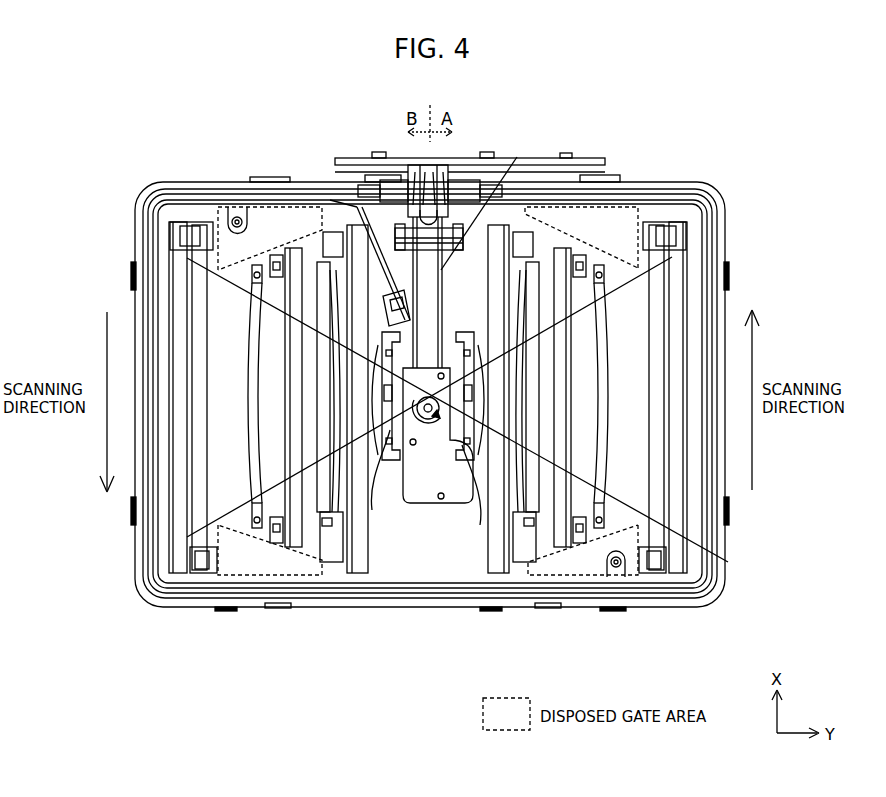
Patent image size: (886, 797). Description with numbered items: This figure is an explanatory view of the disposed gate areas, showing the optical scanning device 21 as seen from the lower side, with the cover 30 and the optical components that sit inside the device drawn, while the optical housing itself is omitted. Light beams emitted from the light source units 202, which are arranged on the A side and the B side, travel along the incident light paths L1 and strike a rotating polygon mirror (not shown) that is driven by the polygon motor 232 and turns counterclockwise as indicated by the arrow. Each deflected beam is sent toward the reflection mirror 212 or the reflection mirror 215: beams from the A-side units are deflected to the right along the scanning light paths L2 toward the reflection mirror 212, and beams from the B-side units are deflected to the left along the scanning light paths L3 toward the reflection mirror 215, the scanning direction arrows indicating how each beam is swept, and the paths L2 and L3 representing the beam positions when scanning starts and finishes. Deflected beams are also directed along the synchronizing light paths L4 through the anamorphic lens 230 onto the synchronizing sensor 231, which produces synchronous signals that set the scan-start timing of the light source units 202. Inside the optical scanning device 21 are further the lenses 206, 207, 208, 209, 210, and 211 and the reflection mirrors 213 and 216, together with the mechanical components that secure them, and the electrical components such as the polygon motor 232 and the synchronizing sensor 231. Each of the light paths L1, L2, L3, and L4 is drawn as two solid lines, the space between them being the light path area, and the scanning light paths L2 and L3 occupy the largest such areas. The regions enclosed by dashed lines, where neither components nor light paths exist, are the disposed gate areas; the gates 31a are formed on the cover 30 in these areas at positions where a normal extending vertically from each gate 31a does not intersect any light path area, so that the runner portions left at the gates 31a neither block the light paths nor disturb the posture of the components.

The optical scanning device 21 is at (712, 150).
The cover 30 is at (440, 560).
The gate 31a is at (240, 212).
The light source unit 202 is at (410, 160).
The lens 206 is at (480, 520).
The lens 207 is at (660, 515).
The lens 208 is at (535, 545).
The lens 209 is at (400, 505).
The lens 210 is at (278, 545).
The lens 211 is at (350, 580).
The reflection mirror 212 is at (685, 455).
The reflection mirror 213 is at (565, 560).
The reflection mirror 215 is at (150, 578).
The reflection mirror 216 is at (338, 562).
The anamorphic lens 230 is at (398, 365).
The synchronizing sensor 231 is at (395, 305).
The polygon motor 232 is at (412, 500).
The incident light path L1 is at (517, 160).
The scanning light path L2 is at (637, 158).
The scanning light path L3 is at (212, 245).
The synchronizing light path L4 is at (310, 160).